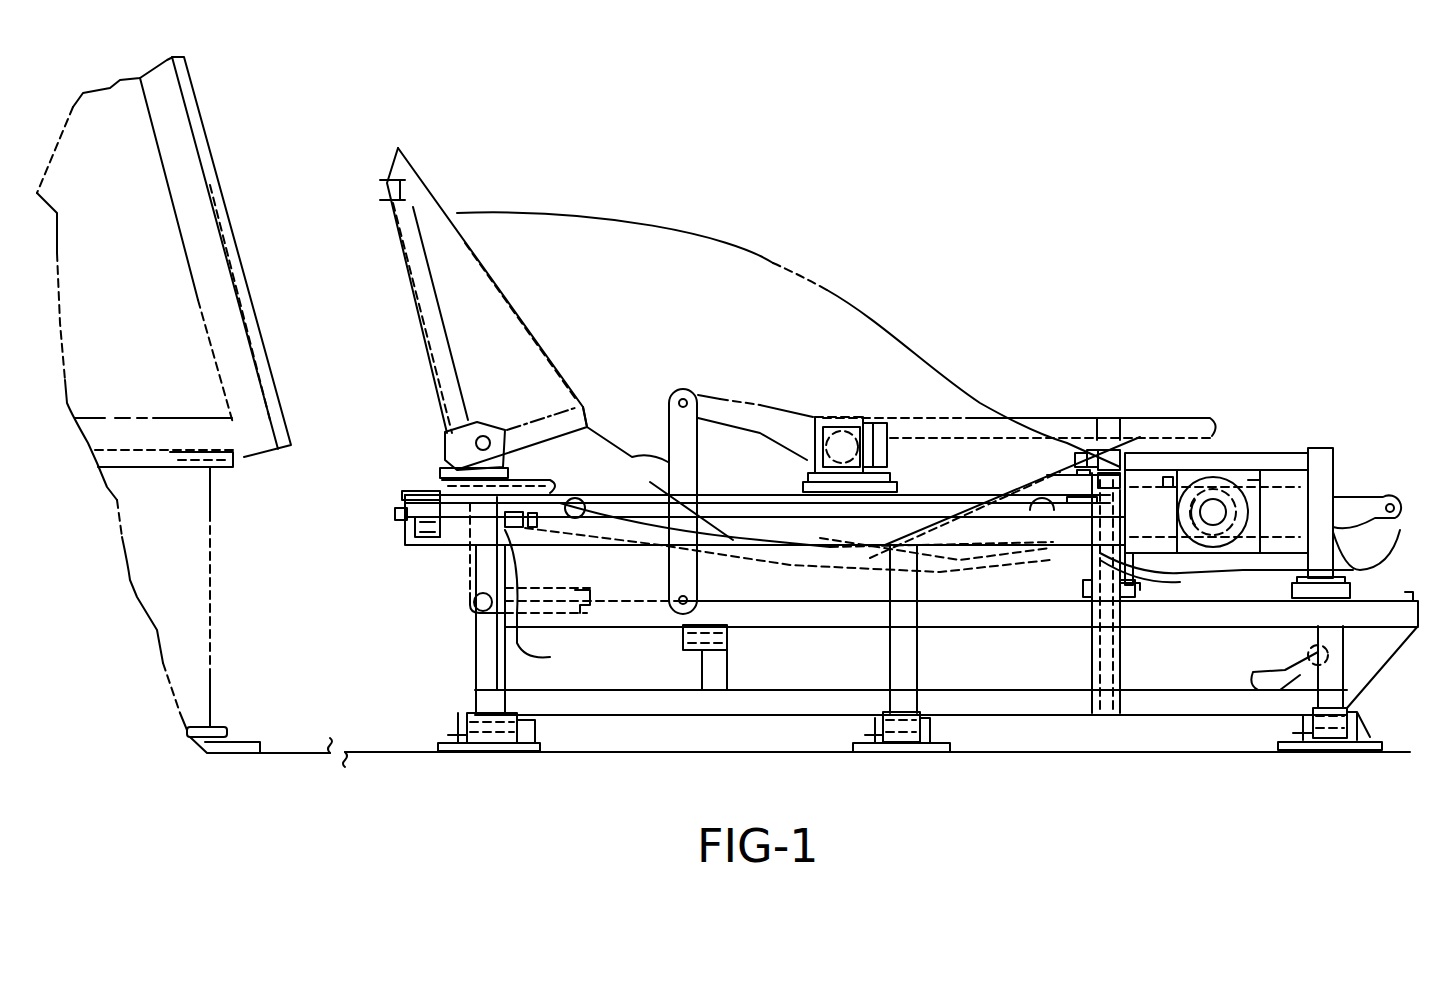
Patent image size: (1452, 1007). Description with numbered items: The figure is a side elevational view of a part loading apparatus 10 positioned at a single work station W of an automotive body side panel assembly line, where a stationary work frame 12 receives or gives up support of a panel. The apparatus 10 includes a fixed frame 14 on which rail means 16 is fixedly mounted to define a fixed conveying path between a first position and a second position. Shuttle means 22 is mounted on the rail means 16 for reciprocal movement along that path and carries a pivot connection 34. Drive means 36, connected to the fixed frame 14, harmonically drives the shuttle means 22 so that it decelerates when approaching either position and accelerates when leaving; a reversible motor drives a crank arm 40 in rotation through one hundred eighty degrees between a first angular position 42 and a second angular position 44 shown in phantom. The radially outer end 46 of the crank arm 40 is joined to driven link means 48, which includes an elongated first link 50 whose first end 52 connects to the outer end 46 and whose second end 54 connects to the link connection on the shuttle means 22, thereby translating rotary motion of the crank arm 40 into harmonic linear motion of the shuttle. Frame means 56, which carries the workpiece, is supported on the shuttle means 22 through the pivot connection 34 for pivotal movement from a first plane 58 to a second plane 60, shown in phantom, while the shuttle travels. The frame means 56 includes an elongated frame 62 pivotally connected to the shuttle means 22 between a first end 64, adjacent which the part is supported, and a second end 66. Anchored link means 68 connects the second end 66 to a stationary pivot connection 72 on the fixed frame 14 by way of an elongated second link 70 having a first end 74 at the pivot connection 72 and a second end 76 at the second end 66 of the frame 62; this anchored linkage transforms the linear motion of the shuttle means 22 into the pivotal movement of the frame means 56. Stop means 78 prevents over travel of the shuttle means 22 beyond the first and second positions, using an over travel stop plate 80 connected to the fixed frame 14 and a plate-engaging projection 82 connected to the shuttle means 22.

The part loading apparatus 10 is at (1207, 278).
The stationary work frame 12 is at (199, 296).
The work station W is at (220, 359).
The fixed frame 14 is at (948, 628).
The rail means 16 is at (746, 458).
The shuttle means 22 is at (913, 477).
The pivot connection 34 is at (820, 415).
The drive means 36 is at (1213, 480).
The crank arm 40 is at (1280, 487).
The first angular position 42 is at (1253, 483).
The second angular position 44 is at (1167, 483).
The radially outer end 46 is at (1387, 497).
The driven link means 48 is at (1173, 570).
The first link 50 is at (790, 565).
The first end 52 is at (1400, 545).
The second end 54 is at (942, 563).
The frame means 56 is at (380, 197).
The first plane 58 is at (1097, 417).
The second plane 60 is at (375, 172).
The elongated frame 62 is at (424, 334).
The first end 64 is at (392, 180).
The second end 66 is at (703, 391).
The anchored link means 68 is at (655, 430).
The second link 70 is at (627, 463).
The pivot connection 72 is at (673, 622).
The first end 74 is at (673, 597).
The second end 76 is at (670, 397).
The stop means 78 is at (523, 543).
The over travel stop plate 80 is at (523, 650).
The plate-engaging projection 82 is at (537, 520).